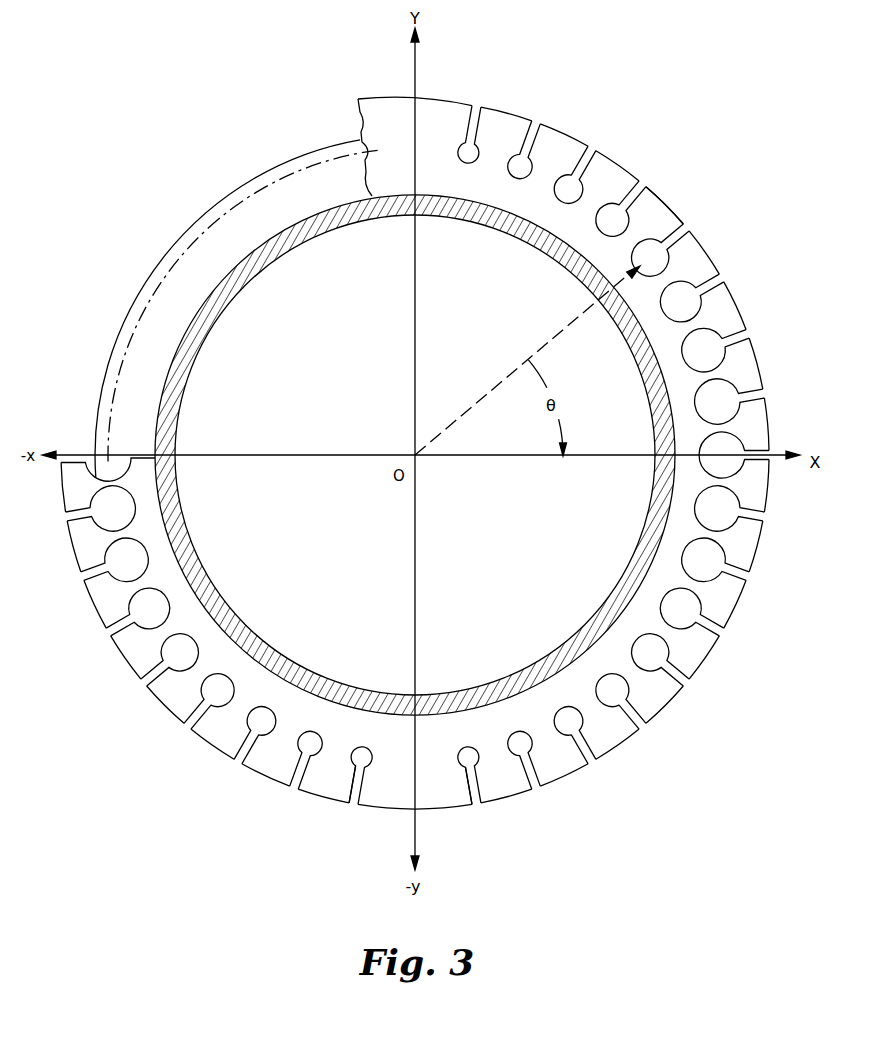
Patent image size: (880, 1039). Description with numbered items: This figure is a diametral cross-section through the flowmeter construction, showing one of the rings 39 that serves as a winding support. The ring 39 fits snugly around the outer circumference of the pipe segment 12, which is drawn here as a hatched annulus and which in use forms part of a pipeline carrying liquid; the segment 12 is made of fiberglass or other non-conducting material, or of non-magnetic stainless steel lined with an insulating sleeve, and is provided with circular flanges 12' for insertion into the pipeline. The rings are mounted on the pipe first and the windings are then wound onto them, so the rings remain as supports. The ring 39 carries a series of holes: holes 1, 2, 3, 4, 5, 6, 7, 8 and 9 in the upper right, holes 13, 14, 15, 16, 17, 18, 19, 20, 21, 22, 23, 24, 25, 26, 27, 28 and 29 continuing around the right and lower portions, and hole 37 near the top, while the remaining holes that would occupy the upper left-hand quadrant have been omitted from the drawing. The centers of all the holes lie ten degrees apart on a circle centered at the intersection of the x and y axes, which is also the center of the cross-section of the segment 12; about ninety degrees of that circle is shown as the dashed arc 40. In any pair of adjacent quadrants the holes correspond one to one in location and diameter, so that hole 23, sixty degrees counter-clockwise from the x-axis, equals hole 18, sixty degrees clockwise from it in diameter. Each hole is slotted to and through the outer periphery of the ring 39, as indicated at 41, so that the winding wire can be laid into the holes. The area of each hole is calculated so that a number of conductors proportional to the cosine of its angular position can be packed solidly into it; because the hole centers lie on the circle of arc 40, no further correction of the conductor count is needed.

The hole 1 is at (473, 162).
The hole 2 is at (524, 178).
The hole 3 is at (570, 203).
The hole 4 is at (613, 236).
The hole 5 is at (678, 242).
The hole 6 is at (711, 291).
The hole 7 is at (735, 345).
The hole 8 is at (747, 390).
The hole 9 is at (753, 449).
The pipe segment 12 is at (415, 455).
The circular flange 12' is at (443, 347).
The hole 13 is at (749, 508).
The hole 14 is at (735, 565).
The hole 15 is at (711, 619).
The hole 16 is at (678, 668).
The hole 17 is at (603, 680).
The hole 18 is at (563, 710).
The hole 19 is at (517, 733).
The hole 20 is at (464, 755).
The hole 21 is at (363, 758).
The hole 22 is at (318, 742).
The hole 23 is at (272, 722).
The hole 24 is at (230, 698).
The hole 25 is at (152, 668).
The hole 26 is at (119, 619).
The hole 27 is at (95, 565).
The hole 28 is at (83, 520).
The hole 29 is at (92, 478).
The hole 37 is at (373, 145).
The ring 39 is at (672, 207).
The arc of circle 40 is at (172, 250).
The slot 41 is at (356, 812).